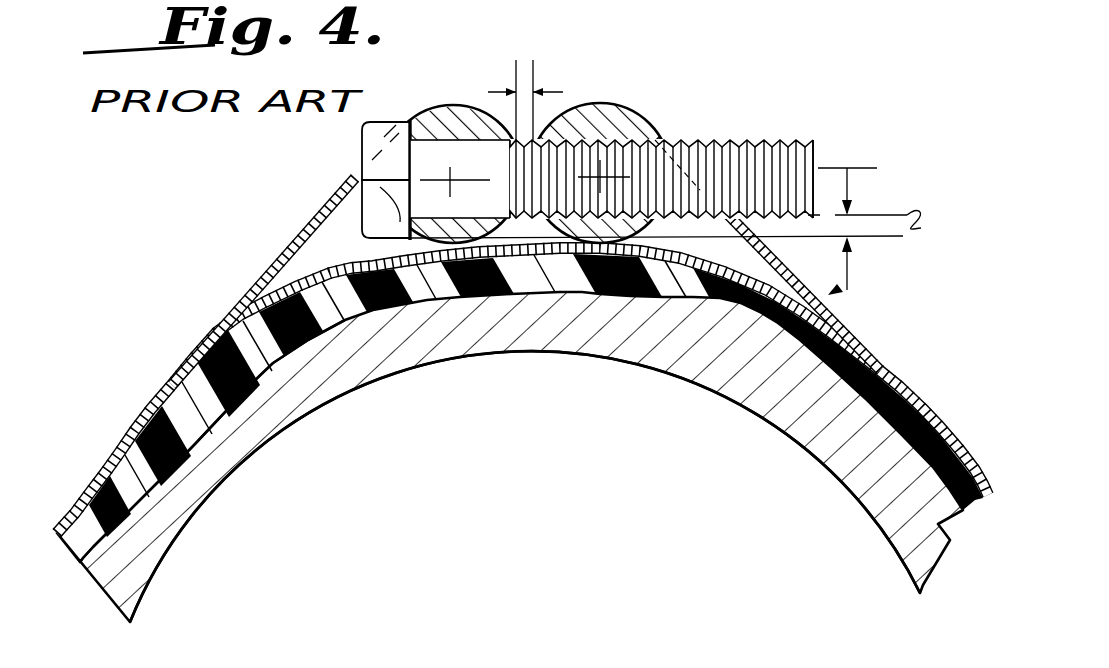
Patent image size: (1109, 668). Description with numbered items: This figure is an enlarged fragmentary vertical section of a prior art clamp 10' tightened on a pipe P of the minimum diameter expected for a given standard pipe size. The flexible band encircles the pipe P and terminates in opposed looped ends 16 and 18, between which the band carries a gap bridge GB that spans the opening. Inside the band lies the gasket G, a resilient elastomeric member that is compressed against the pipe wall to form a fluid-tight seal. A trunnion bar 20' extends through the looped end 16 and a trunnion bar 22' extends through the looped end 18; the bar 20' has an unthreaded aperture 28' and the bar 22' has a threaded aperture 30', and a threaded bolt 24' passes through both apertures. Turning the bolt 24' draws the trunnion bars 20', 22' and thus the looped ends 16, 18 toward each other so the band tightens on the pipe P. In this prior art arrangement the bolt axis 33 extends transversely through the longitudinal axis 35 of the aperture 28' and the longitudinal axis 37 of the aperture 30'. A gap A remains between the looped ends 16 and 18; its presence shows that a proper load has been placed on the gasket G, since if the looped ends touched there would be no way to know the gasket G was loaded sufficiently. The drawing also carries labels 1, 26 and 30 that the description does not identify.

The trunnion bar 20' is at (453, 153).
The aperture 28' is at (466, 130).
The gap A is at (563, 92).
The ring 30 is at (600, 147).
The trunnion bar 22' is at (647, 121).
The longitudinal axis of aperture 37 is at (652, 137).
The aperture 30' is at (661, 160).
The threaded bolt 24' is at (855, 162).
The bolt axis 33 is at (848, 168).
The prior art clamp 10' is at (666, 265).
The looped end 18 is at (836, 311).
The looped end 16 is at (247, 293).
The outer layer 1 is at (100, 463).
The longitudinal axis of aperture 35 is at (450, 180).
The panel edge 26 is at (293, 362).
The gasket member G is at (427, 300).
The gap bridge GB is at (523, 260).
The pipe P is at (867, 510).